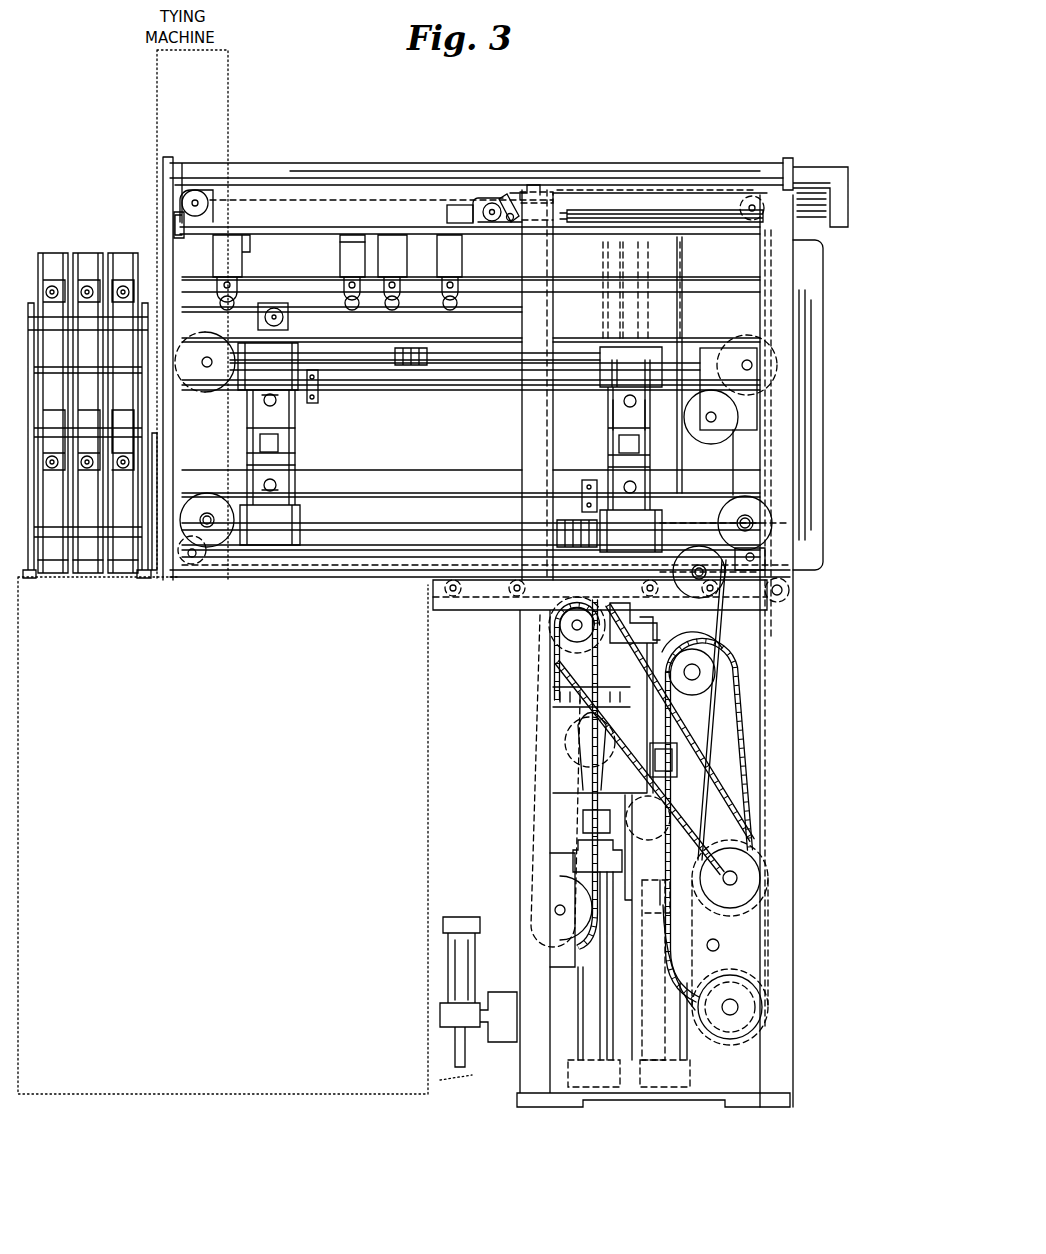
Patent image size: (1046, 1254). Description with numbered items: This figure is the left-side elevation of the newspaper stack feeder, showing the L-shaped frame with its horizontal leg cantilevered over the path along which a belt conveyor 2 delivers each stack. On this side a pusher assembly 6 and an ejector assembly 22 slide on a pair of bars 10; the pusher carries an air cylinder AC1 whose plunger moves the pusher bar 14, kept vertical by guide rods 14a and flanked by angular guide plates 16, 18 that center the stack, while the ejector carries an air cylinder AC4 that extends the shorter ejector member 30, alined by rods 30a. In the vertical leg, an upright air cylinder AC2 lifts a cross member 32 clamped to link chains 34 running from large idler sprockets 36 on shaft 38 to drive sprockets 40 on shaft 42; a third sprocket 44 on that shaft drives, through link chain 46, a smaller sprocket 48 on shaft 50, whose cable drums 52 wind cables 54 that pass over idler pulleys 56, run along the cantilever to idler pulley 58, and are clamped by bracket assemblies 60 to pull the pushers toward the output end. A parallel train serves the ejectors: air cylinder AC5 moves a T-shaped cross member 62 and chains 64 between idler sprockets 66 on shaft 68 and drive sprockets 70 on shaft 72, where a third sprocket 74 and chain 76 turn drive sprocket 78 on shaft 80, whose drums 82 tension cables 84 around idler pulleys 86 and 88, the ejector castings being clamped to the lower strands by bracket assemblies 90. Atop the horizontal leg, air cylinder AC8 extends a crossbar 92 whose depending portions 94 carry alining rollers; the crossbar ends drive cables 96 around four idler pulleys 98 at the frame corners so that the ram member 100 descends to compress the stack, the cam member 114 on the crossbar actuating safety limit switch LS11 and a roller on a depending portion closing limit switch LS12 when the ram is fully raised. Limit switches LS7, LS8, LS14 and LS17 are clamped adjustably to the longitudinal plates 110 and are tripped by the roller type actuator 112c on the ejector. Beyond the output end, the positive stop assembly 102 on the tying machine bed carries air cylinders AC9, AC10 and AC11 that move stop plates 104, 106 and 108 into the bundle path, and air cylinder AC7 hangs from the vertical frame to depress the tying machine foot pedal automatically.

The belt conveyor 2 is at (790, 600).
The pusher assembly 6 is at (610, 420).
The bars 10 is at (370, 355).
The pusher bar 14 is at (605, 322).
The guide rods 14a is at (624, 402).
The angular guide plate 16 is at (682, 330).
The angular guide plate 18 is at (545, 323).
The ejector assembly 22 is at (300, 480).
The ejector member 30 is at (248, 440).
The rods 30a is at (265, 400).
The cross member 32 is at (583, 825).
The link chains 34 is at (530, 858).
The idler sprockets 36 is at (540, 880).
The shaft 38 is at (555, 910).
The drive sprockets 40 is at (553, 640).
The shaft 42 is at (565, 622).
The third sprocket 44 is at (585, 670).
The link chain 46 is at (600, 705).
The sprocket 48 is at (770, 850).
The shaft 50 is at (738, 878).
The cable drums 52 is at (700, 933).
The cables 54 is at (408, 495).
The idler pulleys 56 is at (700, 548).
The idler pulley 58 is at (210, 547).
The bracket assemblies 60 is at (582, 490).
The T-shaped cross member 62 is at (677, 762).
The link chains 64 is at (714, 735).
The idler sprockets 66 is at (760, 975).
The shaft 68 is at (720, 945).
The drive sprockets 70 is at (713, 678).
The shaft 72 is at (700, 672).
The third sprocket 74 is at (742, 715).
The link chain 76 is at (722, 650).
The drive sprocket 78 is at (768, 1022).
The shaft 80 is at (740, 1007).
The drums 82 is at (755, 1035).
The cables 84 is at (428, 345).
The idler pulleys 86 is at (752, 349).
The idler pulley 88 is at (215, 345).
The bracket assemblies 90 is at (318, 398).
The crossbar 92 is at (484, 198).
The depending portions 94 is at (487, 205).
The cables 96 is at (292, 178).
The idler pulleys 98 is at (196, 190).
The ram member 100 is at (175, 228).
The positive stop assembly 102 is at (80, 201).
The stop plate 104 is at (88, 578).
The stop plate 106 is at (125, 578).
The stop plate 108 is at (52, 578).
The plates 110 is at (585, 240).
The roller type actuator 112c is at (273, 305).
The cam member 114 is at (452, 205).
The air cylinder AC1 is at (619, 443).
The air cylinder AC2 is at (595, 1085).
The air cylinder AC4 is at (278, 443).
The air cylinder AC5 is at (668, 1085).
The air cylinder AC7 is at (448, 970).
The air cylinder AC8 is at (817, 188).
The air cylinder AC9 is at (85, 368).
The air cylinder AC10 is at (122, 368).
The air cylinder AC11 is at (50, 370).
The limit switch LS7 is at (352, 238).
The limit switch LS8 is at (462, 255).
The limit switch LS11 is at (386, 235).
The limit switch LS12 is at (512, 200).
The limit switch LS14 is at (232, 235).
The limit switch LS17 is at (343, 235).